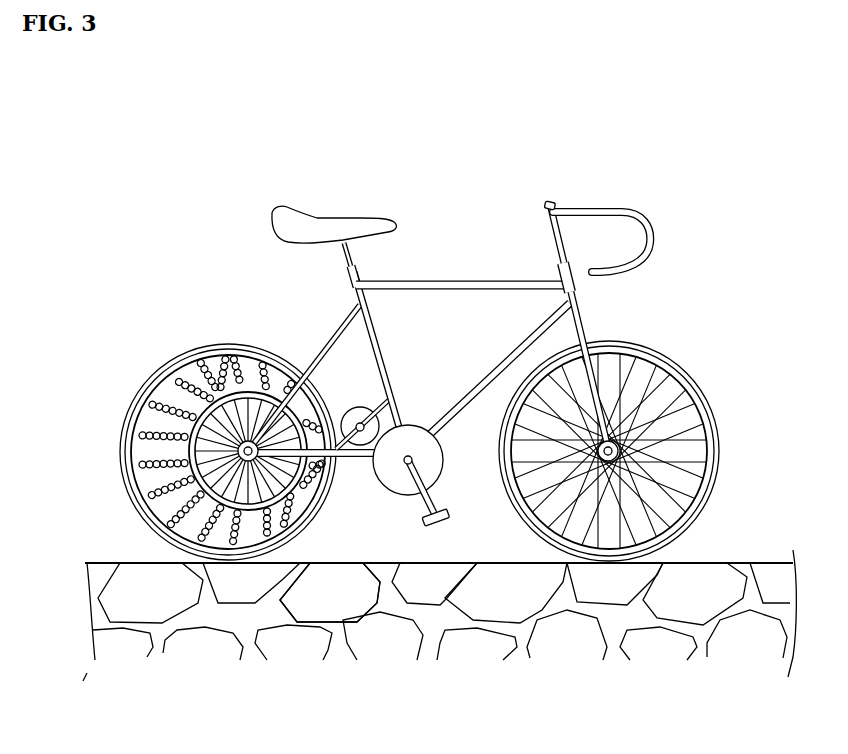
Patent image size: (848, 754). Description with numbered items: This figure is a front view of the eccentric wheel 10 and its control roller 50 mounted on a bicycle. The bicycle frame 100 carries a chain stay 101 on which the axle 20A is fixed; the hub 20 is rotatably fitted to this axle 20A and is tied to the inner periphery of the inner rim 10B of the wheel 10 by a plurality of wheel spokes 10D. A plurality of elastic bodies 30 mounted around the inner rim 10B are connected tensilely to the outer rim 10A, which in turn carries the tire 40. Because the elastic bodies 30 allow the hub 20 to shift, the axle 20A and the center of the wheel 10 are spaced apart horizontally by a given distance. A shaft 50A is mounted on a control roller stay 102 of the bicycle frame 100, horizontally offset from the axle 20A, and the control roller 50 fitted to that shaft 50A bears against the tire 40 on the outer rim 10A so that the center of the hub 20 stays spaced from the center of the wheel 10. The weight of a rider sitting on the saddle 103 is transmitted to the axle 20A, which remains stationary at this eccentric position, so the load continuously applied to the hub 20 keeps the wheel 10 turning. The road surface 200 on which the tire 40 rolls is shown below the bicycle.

The wheel 10 is at (155, 503).
The outer rim of the wheel 10A is at (120, 450).
The inner rim of the wheel 10B is at (193, 378).
The wheel spoke 10D is at (276, 380).
The hub 20 is at (228, 392).
The axle 20A is at (178, 420).
The elastic body 30 is at (127, 403).
The tire 40 is at (250, 345).
The control roller 50 is at (362, 407).
The shaft 50A is at (386, 408).
The bicycle frame 100 is at (528, 282).
The chain stay 101 is at (340, 563).
The control roller stay 102 is at (392, 563).
The saddle 103 is at (333, 218).
The road surface 200 is at (736, 563).